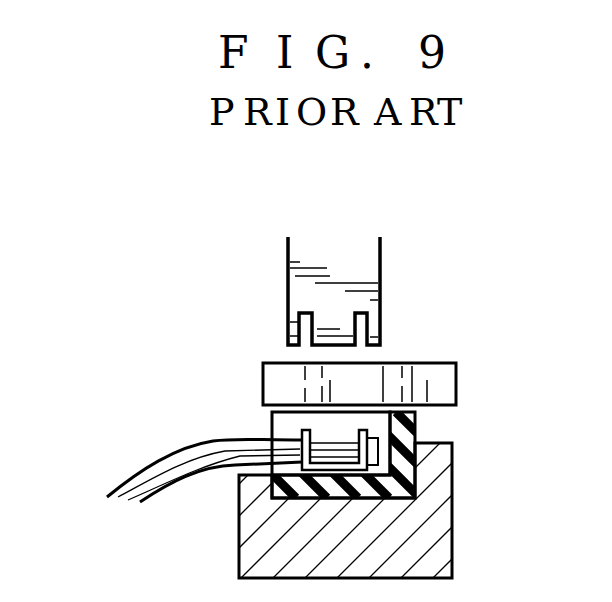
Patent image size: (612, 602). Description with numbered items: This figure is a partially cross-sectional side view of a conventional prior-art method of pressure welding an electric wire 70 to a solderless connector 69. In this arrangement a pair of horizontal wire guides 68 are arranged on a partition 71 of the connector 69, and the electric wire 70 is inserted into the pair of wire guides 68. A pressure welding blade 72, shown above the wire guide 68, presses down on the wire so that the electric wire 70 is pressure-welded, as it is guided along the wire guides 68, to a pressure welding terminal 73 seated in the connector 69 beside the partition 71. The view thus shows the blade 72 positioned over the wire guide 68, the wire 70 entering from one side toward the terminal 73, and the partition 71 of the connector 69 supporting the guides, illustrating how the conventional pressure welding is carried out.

The wire guide 68 is at (263, 370).
The solderless connector 69 is at (271, 421).
The electric wire 70 is at (167, 455).
The partition 71 is at (380, 420).
The pressure welding blade 72 is at (381, 269).
The pressure welding terminal 73 is at (300, 446).